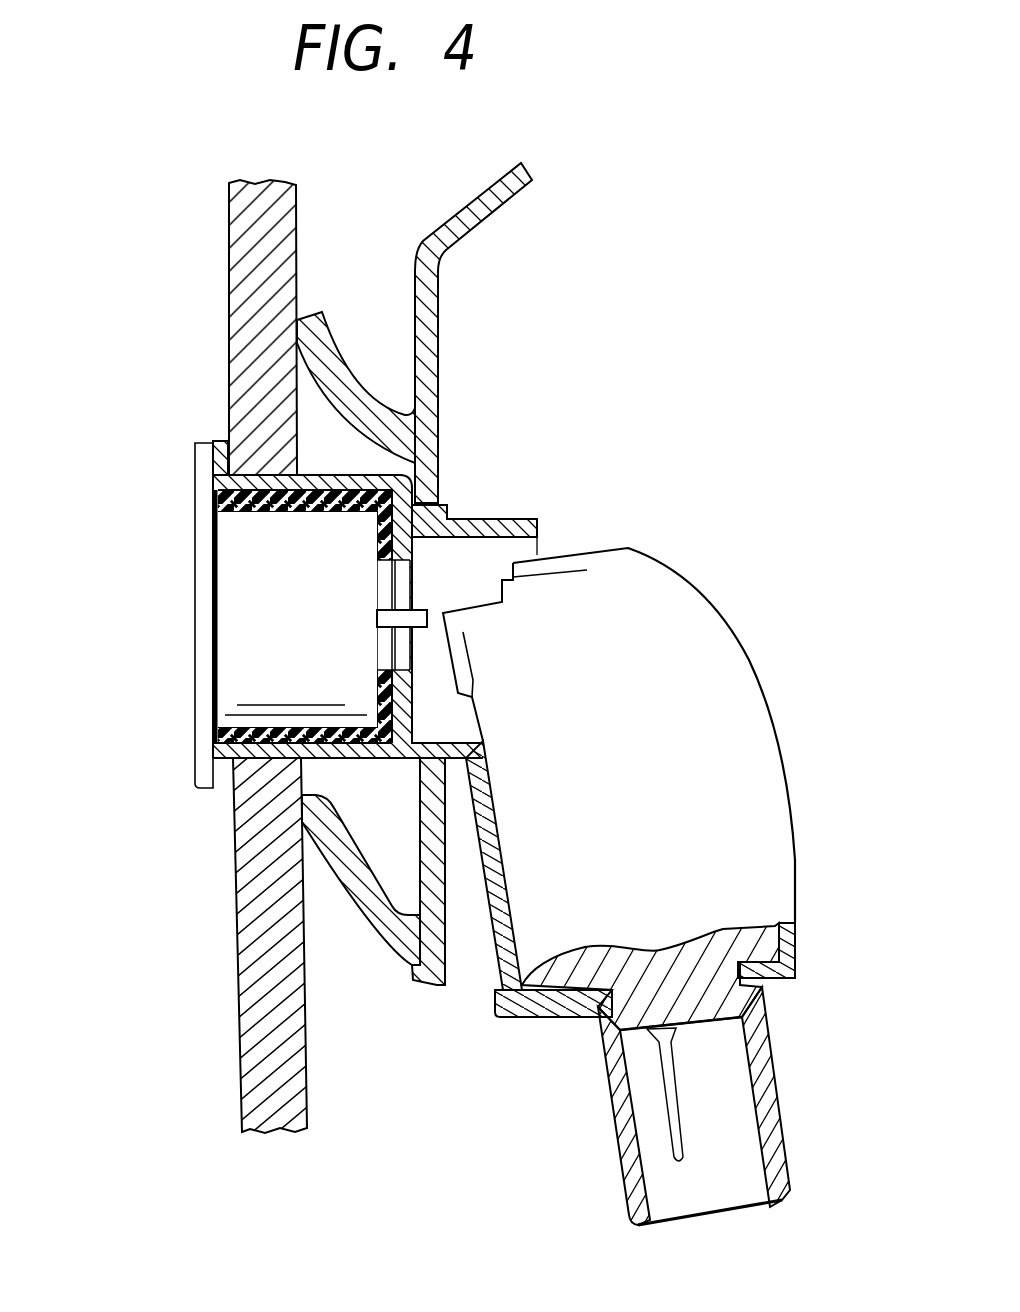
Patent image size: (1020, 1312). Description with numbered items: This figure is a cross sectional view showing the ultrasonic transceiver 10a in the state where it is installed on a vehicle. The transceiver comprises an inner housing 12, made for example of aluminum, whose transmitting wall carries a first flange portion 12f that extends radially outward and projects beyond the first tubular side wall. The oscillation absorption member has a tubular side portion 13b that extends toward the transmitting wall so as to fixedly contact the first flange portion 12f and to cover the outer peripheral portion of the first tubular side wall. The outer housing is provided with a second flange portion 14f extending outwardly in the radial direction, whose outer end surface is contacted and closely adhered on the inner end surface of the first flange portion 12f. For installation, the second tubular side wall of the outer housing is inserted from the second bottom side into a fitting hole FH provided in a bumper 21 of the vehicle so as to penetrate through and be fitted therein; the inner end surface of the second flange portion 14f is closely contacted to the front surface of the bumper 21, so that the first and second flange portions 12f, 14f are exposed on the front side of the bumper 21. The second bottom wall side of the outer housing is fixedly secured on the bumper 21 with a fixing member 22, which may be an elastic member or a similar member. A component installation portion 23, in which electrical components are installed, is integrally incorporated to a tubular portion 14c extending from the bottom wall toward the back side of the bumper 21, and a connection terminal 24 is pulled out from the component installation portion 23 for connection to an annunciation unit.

The ultrasonic transceiver 10a is at (181, 592).
The inner housing 12 is at (227, 673).
The first flange portion 12f is at (193, 453).
The tubular side portion 13b is at (217, 508).
The tubular portion 14c is at (467, 519).
The second flange portion 14f is at (220, 441).
The bumper 21 is at (237, 253).
The fixing member 22 is at (440, 392).
The component installation portion 23 is at (738, 663).
The connection terminal 24 is at (657, 1163).
The fitting hole FH is at (311, 468).